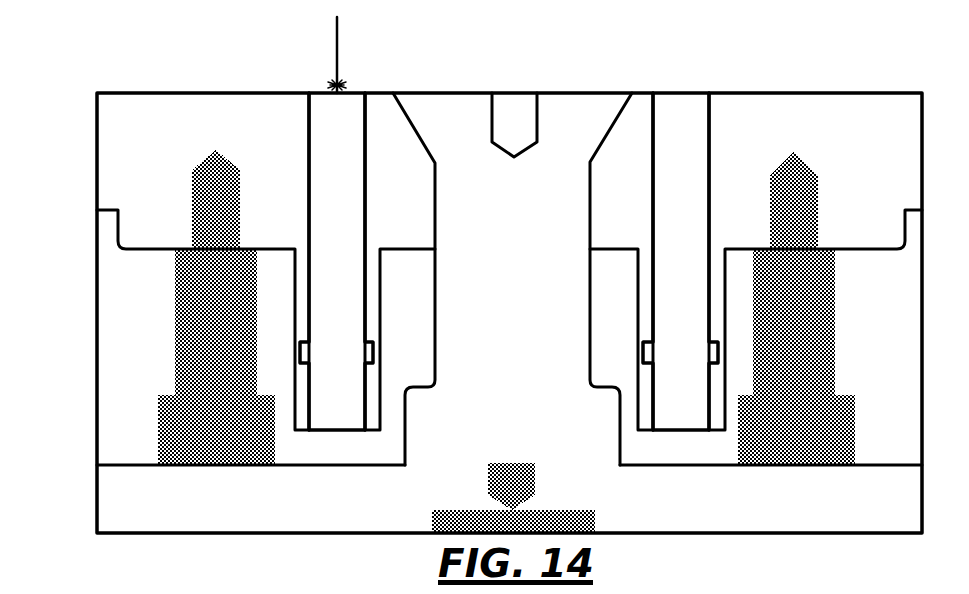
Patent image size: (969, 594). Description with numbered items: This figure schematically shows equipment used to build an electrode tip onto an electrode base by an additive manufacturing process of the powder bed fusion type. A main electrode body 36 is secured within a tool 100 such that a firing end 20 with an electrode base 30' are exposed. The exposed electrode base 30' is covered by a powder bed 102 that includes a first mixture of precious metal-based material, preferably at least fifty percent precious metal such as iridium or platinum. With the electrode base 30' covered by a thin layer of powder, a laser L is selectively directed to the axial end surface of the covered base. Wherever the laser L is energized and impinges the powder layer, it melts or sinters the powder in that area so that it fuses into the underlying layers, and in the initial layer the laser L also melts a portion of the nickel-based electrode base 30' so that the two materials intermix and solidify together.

The tool 100 is at (120, 395).
The main electrode body 36 is at (352, 137).
The firing end 20 is at (327, 108).
The electrode base 30' is at (509, 261).
The powder bed 102 is at (357, 93).
The laser L is at (338, 43).